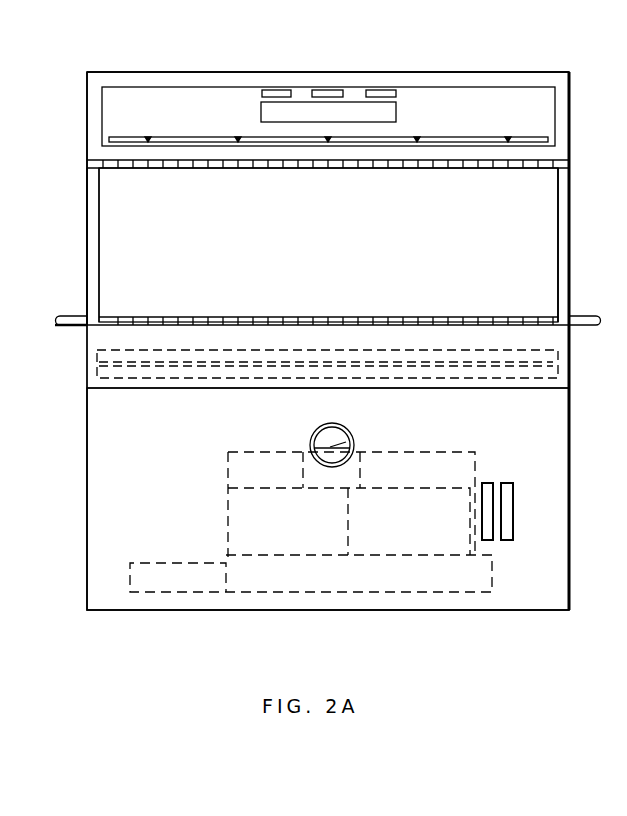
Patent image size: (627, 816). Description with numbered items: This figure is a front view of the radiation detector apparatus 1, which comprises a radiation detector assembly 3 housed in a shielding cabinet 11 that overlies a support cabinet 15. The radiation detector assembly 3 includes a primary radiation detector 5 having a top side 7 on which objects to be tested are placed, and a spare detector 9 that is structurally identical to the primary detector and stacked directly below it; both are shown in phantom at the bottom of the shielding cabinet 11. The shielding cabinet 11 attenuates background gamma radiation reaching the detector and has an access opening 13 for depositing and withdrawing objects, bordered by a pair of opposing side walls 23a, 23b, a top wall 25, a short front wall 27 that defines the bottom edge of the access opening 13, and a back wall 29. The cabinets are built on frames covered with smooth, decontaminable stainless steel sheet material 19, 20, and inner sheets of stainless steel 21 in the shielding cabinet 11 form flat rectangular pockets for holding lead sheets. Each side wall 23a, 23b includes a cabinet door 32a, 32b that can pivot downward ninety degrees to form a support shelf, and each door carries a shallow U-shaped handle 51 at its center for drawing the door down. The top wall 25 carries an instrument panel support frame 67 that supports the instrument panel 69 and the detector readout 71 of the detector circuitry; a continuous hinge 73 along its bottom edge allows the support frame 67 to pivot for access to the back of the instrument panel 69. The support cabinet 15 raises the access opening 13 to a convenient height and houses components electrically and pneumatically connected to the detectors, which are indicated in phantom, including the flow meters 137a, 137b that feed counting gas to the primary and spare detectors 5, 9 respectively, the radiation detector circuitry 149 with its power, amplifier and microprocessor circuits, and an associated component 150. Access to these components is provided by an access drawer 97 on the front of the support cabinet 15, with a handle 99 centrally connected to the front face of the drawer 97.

The radiation detector apparatus 1 is at (78, 50).
The radiation detector assembly 3 is at (252, 295).
The primary radiation detector 5 is at (97, 352).
The top side 7 is at (237, 352).
The spare detector 9 is at (97, 375).
The shielding cabinet 11 is at (75, 236).
The access opening 13 is at (525, 204).
The support cabinet 15 is at (75, 466).
The stainless steel sheet material 19 is at (573, 214).
The stainless steel sheet material 20 is at (571, 488).
The inner sheets of stainless steel 21 is at (558, 264).
The side wall 23a is at (87, 186).
The side wall 23b is at (571, 238).
The top wall 25 is at (352, 72).
The short front wall 27 is at (345, 347).
The back wall 29 is at (355, 216).
The cabinet door 32a is at (87, 265).
The cabinet door 32b is at (571, 283).
The handle 51 is at (596, 346).
The instrument panel support frame 67 is at (98, 100).
The instrument panel 69 is at (188, 97).
The detector readout 71 is at (305, 92).
The continuous hinge 73 is at (410, 168).
The access drawer 97 is at (177, 496).
The fan motor 99 is at (347, 441).
The flow meter 137a is at (488, 483).
The flow meter 137b is at (505, 540).
The radiation detector circuitry 149 is at (365, 581).
The control board 150 is at (307, 532).